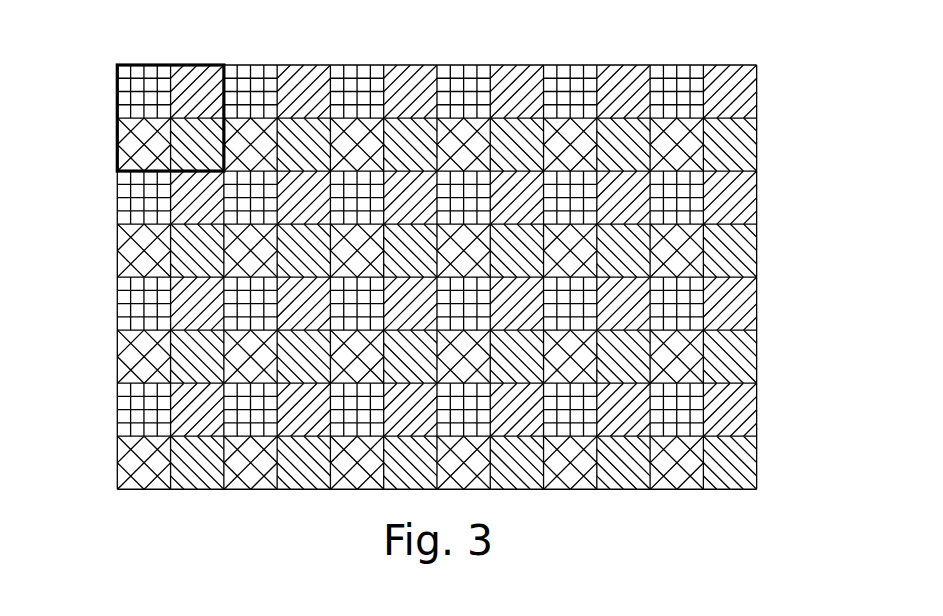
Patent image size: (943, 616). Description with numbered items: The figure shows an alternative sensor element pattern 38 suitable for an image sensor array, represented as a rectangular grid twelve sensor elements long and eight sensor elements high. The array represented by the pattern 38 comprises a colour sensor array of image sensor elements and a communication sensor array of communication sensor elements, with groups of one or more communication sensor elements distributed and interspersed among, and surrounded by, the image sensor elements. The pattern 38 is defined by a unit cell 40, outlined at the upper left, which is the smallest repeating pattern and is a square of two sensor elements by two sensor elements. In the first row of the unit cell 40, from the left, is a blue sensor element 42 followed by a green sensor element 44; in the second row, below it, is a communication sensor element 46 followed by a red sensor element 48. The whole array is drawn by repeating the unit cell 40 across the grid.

The sensor element pattern 38 is at (423, 244).
The unit cell 40 is at (152, 85).
The blue sensor element 42 is at (114, 91).
The green sensor element 44 is at (197, 91).
The communication sensor element 46 is at (144, 144).
The red sensor element 48 is at (197, 144).